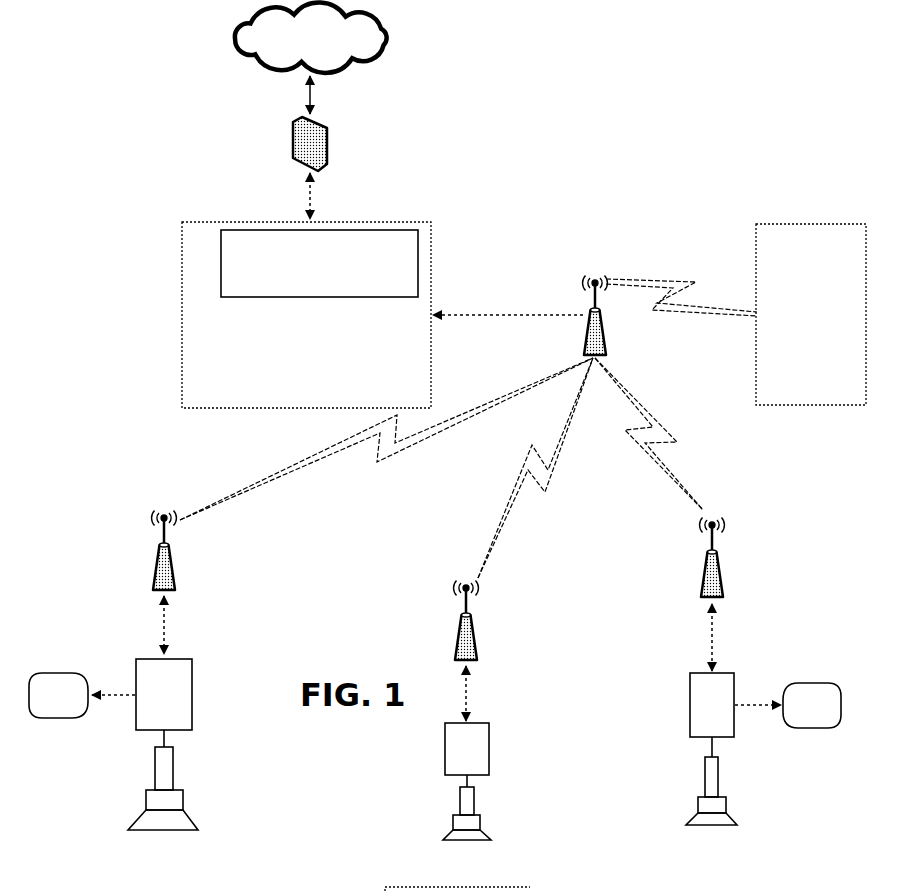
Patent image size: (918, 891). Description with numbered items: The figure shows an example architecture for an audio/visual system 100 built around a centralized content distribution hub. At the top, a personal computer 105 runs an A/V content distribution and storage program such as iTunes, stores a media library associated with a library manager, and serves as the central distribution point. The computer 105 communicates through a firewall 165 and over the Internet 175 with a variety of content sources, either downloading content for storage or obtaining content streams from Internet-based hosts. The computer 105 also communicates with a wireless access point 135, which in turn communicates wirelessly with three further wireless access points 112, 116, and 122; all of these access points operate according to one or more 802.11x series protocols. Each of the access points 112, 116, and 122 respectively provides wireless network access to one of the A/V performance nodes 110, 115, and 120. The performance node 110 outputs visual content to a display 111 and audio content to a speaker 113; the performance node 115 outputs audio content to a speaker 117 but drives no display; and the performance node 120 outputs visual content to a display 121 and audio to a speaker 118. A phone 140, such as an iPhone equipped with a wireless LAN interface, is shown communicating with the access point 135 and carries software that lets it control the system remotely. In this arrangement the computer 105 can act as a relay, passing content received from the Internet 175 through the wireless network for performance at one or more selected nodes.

The system 100 is at (558, 228).
The personal computer 105 is at (287, 343).
The A/V performance node 110 is at (145, 706).
The display 111 is at (77, 708).
The wireless access point 112 is at (153, 575).
The speaker 113 is at (153, 768).
The A/V performance node 115 is at (448, 759).
The wireless access point 116 is at (453, 640).
The speaker 117 is at (453, 820).
The speaker 118 is at (690, 820).
The A/V performance node 120 is at (693, 716).
The display 121 is at (793, 718).
The wireless access point 122 is at (700, 580).
The wireless access point 135 is at (588, 343).
The phone 140 is at (792, 366).
The firewall 165 is at (327, 150).
The Internet 175 is at (311, 38).